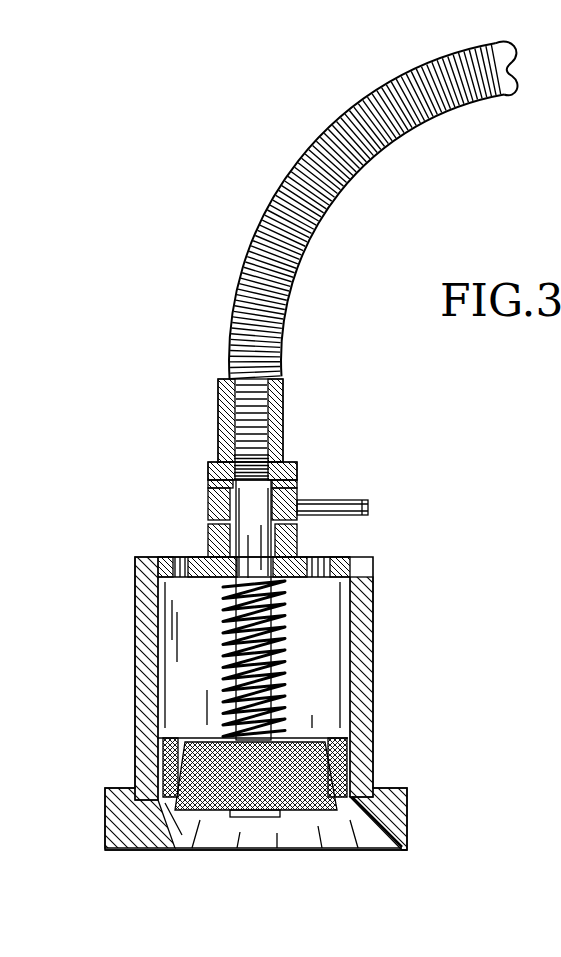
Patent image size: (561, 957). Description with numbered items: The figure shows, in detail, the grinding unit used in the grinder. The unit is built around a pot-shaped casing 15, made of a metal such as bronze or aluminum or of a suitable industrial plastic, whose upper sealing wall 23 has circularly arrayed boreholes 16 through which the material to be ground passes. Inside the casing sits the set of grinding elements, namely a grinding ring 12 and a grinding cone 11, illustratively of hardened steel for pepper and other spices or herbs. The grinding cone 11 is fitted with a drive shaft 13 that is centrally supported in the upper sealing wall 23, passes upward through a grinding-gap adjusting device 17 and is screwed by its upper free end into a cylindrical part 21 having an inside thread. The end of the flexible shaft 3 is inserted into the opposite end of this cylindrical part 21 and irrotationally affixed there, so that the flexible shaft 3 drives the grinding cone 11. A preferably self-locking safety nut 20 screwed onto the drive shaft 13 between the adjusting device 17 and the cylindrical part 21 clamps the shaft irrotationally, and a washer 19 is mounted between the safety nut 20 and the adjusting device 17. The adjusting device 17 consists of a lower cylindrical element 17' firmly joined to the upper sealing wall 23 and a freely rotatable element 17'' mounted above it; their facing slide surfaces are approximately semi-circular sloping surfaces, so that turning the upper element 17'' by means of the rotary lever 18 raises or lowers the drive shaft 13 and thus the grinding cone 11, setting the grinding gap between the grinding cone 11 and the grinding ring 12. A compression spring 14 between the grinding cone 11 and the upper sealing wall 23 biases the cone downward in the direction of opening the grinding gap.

The flexible shaft 3 is at (310, 247).
The grinding cone 11 is at (296, 812).
The grinding ring 12 is at (163, 760).
The drive shaft 13 is at (228, 677).
The compression spring 14 is at (282, 628).
The casing 15 is at (367, 661).
The boreholes 16 is at (224, 598).
The grinding-gap adjusting device 17 is at (272, 511).
The freely rotatable element 17'' is at (311, 492).
The lower cylindrical element 17' is at (308, 540).
The rotary lever 18 is at (368, 504).
The washer 19 is at (296, 487).
The safety nut 20 is at (208, 470).
The cylindrical part 21 is at (284, 421).
The upper sealing wall 23 is at (193, 556).